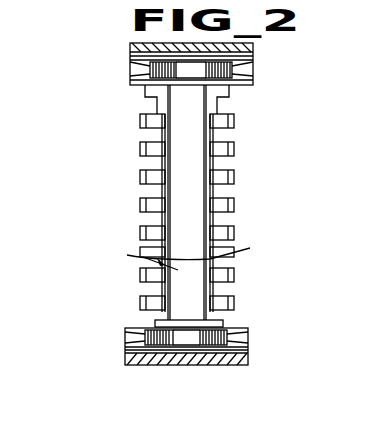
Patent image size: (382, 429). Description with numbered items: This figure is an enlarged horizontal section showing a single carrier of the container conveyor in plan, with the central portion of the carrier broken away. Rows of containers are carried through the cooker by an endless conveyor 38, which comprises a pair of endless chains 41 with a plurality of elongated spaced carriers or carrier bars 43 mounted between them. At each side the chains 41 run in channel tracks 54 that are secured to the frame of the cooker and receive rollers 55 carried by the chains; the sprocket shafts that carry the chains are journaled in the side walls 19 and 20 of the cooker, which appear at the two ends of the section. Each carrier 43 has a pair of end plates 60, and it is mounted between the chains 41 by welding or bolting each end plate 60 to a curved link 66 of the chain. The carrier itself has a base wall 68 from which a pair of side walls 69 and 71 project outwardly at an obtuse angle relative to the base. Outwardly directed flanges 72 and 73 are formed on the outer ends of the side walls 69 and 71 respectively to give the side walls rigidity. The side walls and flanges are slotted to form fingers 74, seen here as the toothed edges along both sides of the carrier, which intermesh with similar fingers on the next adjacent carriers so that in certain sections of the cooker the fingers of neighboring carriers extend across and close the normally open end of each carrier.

The side wall 19 is at (131, 48).
The side wall 20 is at (125, 358).
The endless conveyor 38 is at (118, 338).
The endless chains 41 is at (252, 63).
The carrier bar 43 is at (224, 191).
The channel tracks 54 is at (150, 68).
The rollers 55 is at (128, 86).
The end plates 60 is at (192, 93).
The curved link 66 is at (135, 88).
The base wall 68 is at (177, 240).
The side wall 69 is at (163, 158).
The side wall 71 is at (212, 162).
The flange 72 is at (140, 122).
The flange 73 is at (237, 175).
The fingers 74 is at (143, 230).